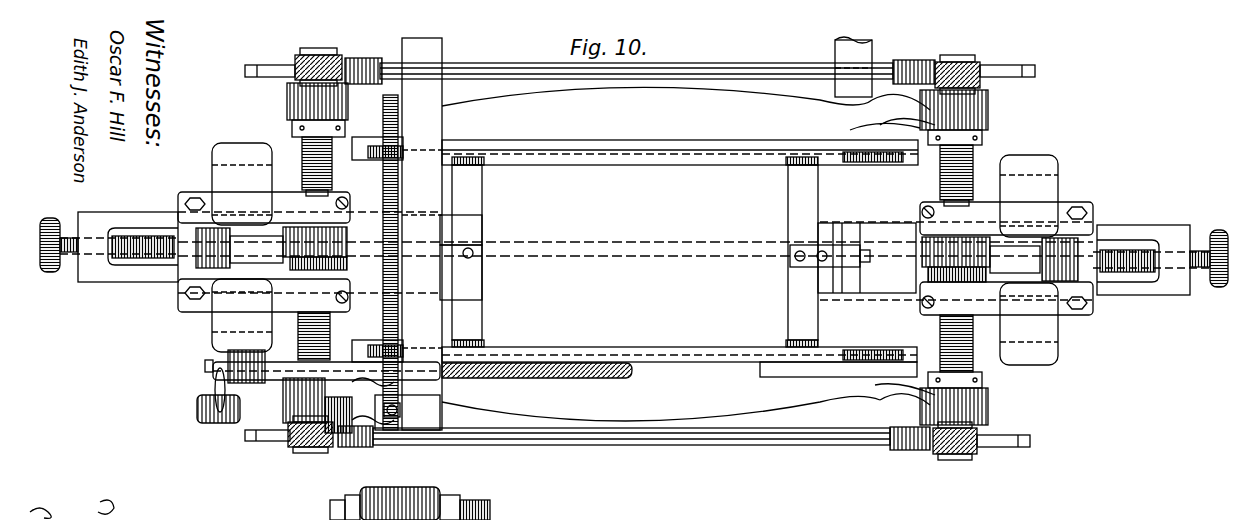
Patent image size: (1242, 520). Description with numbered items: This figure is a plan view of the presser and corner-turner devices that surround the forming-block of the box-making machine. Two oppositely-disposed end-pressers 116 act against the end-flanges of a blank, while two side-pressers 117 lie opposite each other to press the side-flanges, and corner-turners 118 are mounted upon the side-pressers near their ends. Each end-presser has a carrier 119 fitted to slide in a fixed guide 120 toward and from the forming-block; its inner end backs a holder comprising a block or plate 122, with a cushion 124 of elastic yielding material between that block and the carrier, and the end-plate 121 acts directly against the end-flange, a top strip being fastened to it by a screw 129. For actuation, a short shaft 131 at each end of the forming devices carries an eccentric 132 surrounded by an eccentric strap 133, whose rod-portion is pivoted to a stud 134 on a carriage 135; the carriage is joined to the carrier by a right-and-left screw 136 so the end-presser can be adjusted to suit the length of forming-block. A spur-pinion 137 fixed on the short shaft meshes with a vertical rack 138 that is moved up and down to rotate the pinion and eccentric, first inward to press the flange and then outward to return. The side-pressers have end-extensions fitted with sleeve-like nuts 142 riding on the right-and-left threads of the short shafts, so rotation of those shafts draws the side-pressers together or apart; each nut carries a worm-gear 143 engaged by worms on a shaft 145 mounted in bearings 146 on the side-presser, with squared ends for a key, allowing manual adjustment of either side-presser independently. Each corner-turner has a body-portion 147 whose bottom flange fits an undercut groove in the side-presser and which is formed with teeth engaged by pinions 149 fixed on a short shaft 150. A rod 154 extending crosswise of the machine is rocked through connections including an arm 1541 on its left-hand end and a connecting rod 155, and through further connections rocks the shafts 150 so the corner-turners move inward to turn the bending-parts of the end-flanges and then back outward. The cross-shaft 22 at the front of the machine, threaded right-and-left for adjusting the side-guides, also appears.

The cross-shaft 22 is at (484, 499).
The end-presser 116 is at (507, 262).
The side-presser 117 is at (677, 174).
The corner-turner 118 is at (478, 156).
The carrier 119 is at (141, 301).
The fixed guide 120 is at (182, 184).
The end-plate 121 is at (490, 207).
The block or plate 122 is at (836, 216).
The cushion 124 is at (849, 222).
The screw 129 is at (474, 258).
The short shaft 131 is at (300, 320).
The eccentric 132 is at (285, 278).
The eccentric strap 133 is at (354, 265).
The stud 134 is at (193, 238).
The carriage 135 is at (182, 261).
The right-and-left screw 136 is at (95, 271).
The spur-pinion 137 is at (301, 222).
The vertical rack 138 is at (265, 229).
The sleeve-like nut 142 is at (298, 50).
The worm-gear 143 is at (252, 66).
The shaft 145 is at (711, 66).
The bearing 146 is at (362, 58).
The body-portion 147 is at (838, 147).
The pinion 149 is at (376, 160).
The short shaft 150 is at (394, 207).
The rod 154 is at (602, 384).
The arm 1541 is at (212, 392).
The connecting rod 155 is at (197, 425).